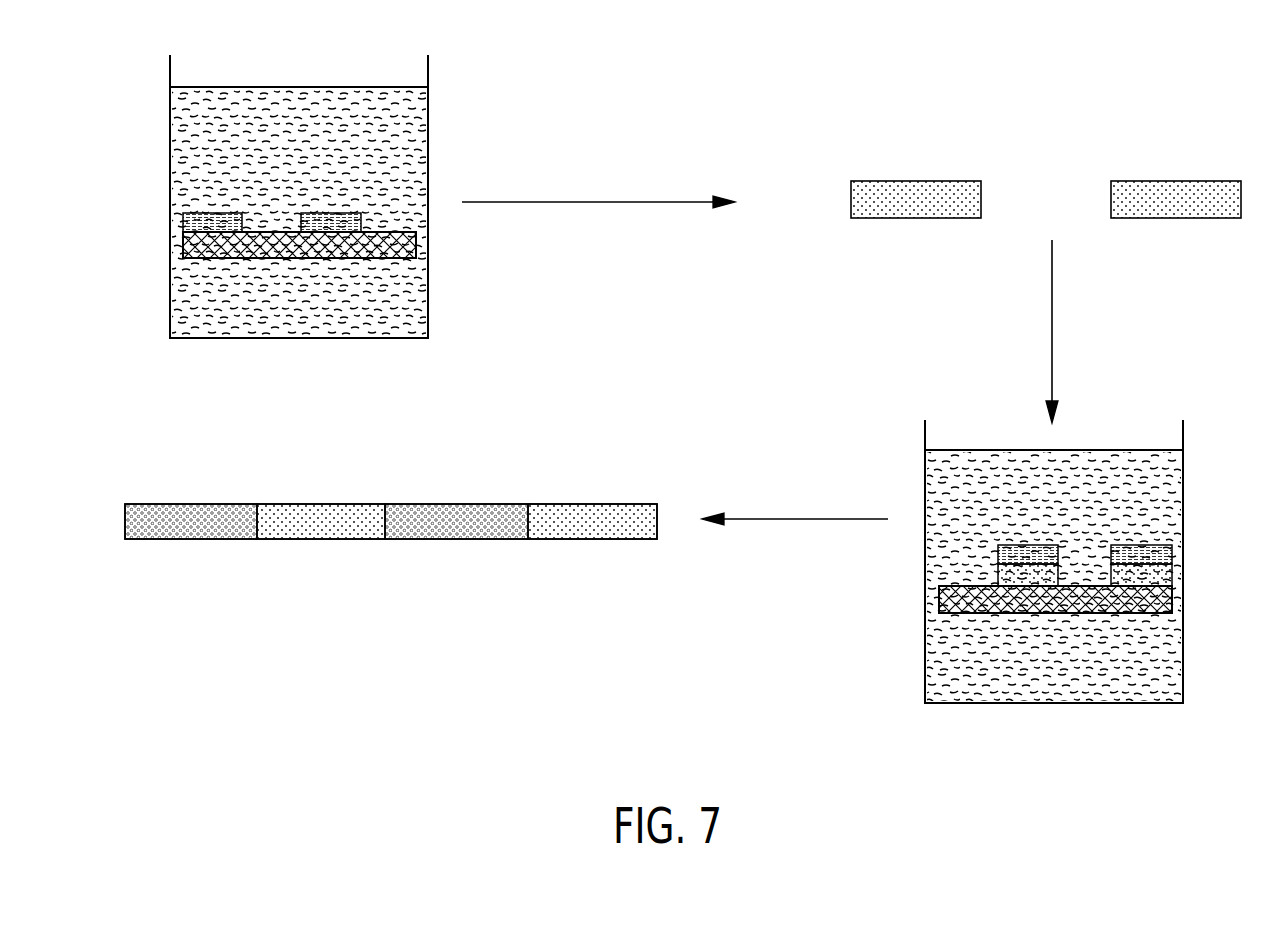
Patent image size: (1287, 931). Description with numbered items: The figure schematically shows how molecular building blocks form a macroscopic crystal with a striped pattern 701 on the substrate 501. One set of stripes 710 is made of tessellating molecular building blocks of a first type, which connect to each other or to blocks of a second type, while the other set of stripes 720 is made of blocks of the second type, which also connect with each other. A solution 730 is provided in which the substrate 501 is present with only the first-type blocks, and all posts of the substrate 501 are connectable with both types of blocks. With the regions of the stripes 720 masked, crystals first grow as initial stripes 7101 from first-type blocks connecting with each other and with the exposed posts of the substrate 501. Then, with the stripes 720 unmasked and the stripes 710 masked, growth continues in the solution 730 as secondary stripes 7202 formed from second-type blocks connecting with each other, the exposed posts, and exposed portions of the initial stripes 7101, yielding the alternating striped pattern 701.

The solution 730 is at (215, 137).
The substrate 501 is at (188, 244).
The initial stripes 7101 is at (281, 576).
The stripes 710 is at (335, 512).
The stripes 720 is at (207, 512).
The secondary stripes 7202 is at (207, 535).
The striped pattern 701 is at (165, 555).